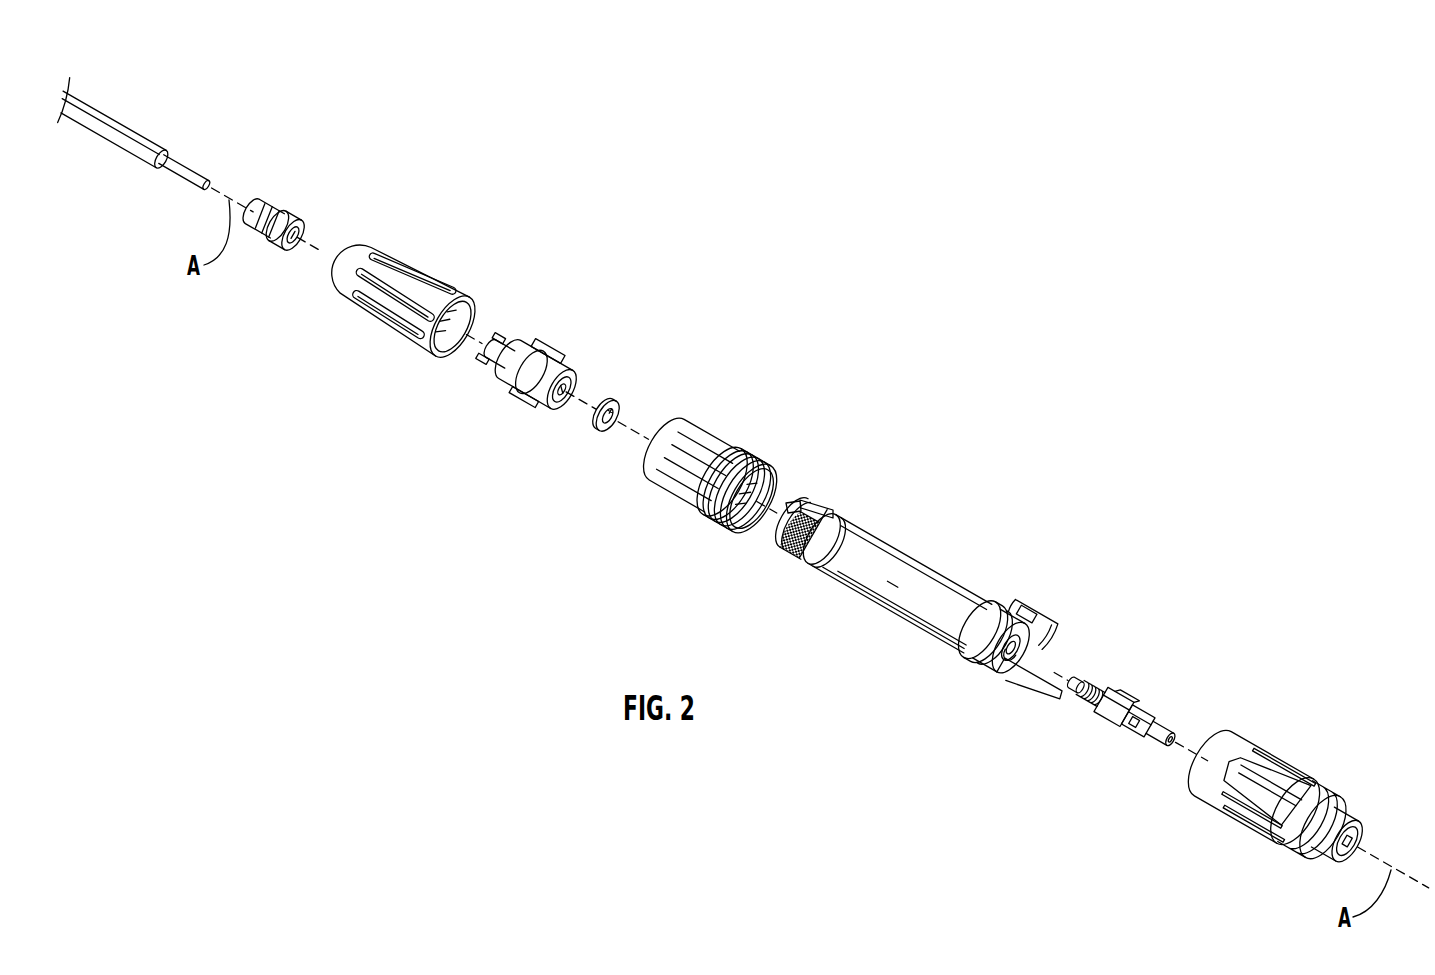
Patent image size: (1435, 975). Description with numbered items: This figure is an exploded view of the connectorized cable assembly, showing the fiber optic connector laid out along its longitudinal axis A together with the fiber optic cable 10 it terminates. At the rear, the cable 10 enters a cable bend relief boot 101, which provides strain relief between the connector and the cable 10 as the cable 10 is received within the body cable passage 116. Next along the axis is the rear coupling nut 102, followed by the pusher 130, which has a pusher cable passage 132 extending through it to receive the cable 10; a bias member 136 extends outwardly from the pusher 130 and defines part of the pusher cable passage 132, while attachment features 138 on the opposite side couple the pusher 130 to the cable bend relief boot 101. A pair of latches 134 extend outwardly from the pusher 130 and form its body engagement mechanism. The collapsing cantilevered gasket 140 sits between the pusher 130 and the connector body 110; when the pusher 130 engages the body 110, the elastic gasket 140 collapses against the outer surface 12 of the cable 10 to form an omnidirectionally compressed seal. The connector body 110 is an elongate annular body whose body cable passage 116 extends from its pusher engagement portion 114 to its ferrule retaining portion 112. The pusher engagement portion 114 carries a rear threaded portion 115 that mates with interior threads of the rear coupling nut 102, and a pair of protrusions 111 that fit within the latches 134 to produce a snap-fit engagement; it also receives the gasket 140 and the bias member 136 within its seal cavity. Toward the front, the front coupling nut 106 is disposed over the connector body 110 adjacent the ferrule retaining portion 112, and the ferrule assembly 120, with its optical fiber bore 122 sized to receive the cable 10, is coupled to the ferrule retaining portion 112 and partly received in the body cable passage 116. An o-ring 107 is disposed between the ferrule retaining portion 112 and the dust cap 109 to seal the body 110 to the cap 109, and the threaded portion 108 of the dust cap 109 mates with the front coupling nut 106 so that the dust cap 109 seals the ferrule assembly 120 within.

The fiber optic cable 10 is at (134, 136).
The outer surface 12 is at (140, 156).
The cable bend relief boot 101 is at (395, 236).
The rear coupling nut 102 is at (439, 247).
The pusher 130 is at (532, 378).
The pusher cable passage 132 is at (572, 387).
The pair of latches 134 is at (556, 358).
The bias member 136 is at (518, 400).
The attachment features 138 is at (500, 346).
The collapsing cantilevered gasket 140 is at (597, 445).
The front coupling nut 106 is at (744, 476).
The threaded portion 108 is at (722, 521).
The connector body 110 is at (917, 584).
The pair of protrusions 111 is at (792, 507).
The pusher engagement portion 114 is at (838, 513).
The rear threaded portion 115 is at (820, 499).
The o-ring 107 is at (960, 638).
The ferrule retaining portion 112 is at (1029, 634).
The body cable passage 116 is at (1006, 668).
The ferrule assembly 120 is at (1154, 729).
The optical fiber bore 122 is at (1068, 692).
The dust cap 109 is at (1223, 827).